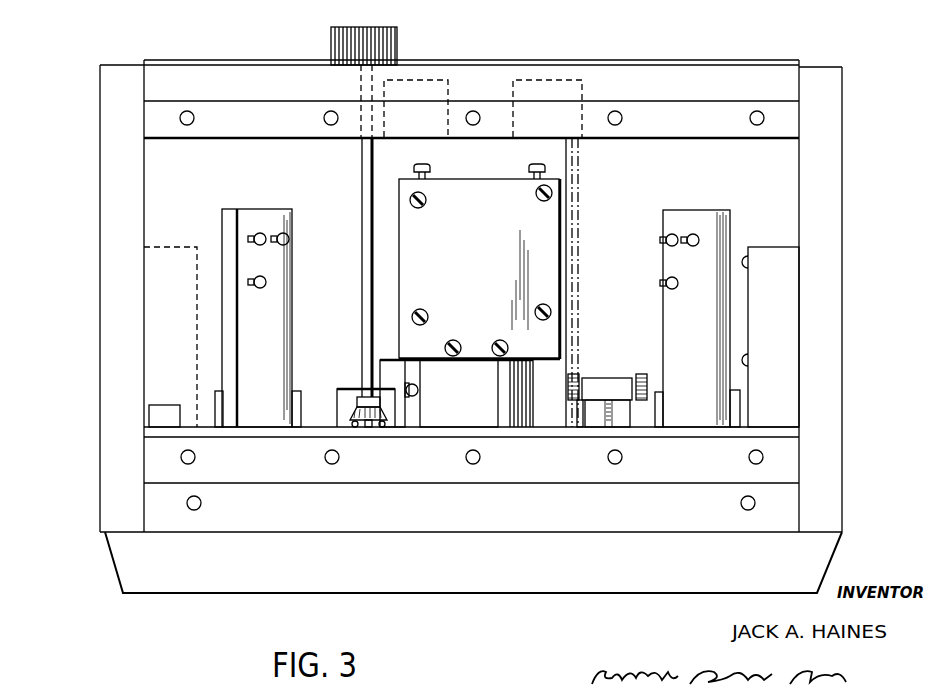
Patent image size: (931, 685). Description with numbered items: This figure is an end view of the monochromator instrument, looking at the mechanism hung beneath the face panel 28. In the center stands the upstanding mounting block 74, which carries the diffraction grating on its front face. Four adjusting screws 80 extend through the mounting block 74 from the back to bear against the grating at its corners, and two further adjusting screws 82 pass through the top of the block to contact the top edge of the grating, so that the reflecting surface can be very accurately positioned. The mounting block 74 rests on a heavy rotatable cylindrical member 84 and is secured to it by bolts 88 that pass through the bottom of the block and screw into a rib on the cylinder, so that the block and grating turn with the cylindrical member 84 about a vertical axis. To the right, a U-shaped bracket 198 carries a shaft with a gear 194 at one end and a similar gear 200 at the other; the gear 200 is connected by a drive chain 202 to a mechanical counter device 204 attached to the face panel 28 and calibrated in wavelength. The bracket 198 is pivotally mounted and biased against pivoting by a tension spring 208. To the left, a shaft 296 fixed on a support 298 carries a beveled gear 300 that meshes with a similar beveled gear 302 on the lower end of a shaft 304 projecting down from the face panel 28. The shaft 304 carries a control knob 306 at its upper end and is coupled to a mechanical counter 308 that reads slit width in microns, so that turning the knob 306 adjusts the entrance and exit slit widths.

The face panel 28 is at (657, 63).
The mounting block 74 is at (502, 192).
The adjusting screws 80 is at (424, 207).
The adjusting screws 82 is at (430, 170).
The rotatable cylindrical member 84 is at (497, 413).
The bolts 88 is at (500, 342).
The gear 194 is at (647, 385).
The U-shaped bracket 198 is at (593, 383).
The gear 200 is at (568, 388).
The drive chain 202 is at (572, 262).
The mechanical counter device 204 is at (570, 125).
The tension spring 208 is at (605, 415).
The shaft 296 is at (367, 428).
The support 298 is at (337, 403).
The beveled gear 300 is at (385, 420).
The beveled gear 302 is at (353, 383).
The shaft 304 is at (367, 258).
The control knob 306 is at (377, 48).
The mechanical counter 308 is at (418, 125).